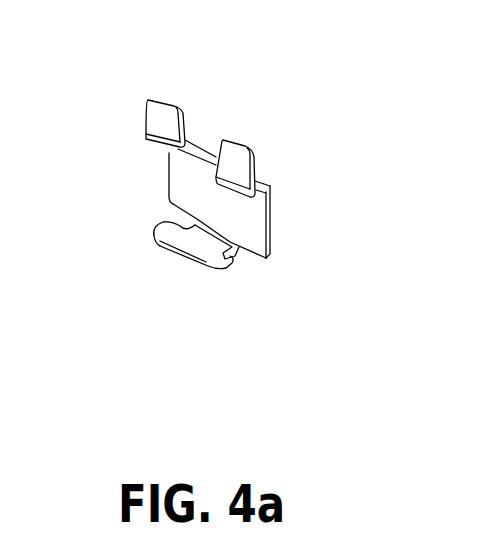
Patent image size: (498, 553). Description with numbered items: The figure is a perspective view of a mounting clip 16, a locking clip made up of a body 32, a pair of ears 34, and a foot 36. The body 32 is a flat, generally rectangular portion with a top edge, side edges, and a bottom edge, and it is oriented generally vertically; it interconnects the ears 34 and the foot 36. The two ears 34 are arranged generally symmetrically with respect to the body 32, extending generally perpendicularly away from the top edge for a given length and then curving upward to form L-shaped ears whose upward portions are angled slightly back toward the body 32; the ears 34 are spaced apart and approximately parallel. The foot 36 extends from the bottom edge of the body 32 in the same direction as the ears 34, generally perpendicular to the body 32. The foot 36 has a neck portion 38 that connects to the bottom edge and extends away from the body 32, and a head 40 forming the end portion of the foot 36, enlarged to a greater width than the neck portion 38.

The mounting clip 16 is at (240, 98).
The body 32 is at (260, 227).
The ears 34 is at (163, 116).
The foot 36 is at (226, 290).
The neck portion 38 is at (193, 226).
The head 40 is at (183, 252).